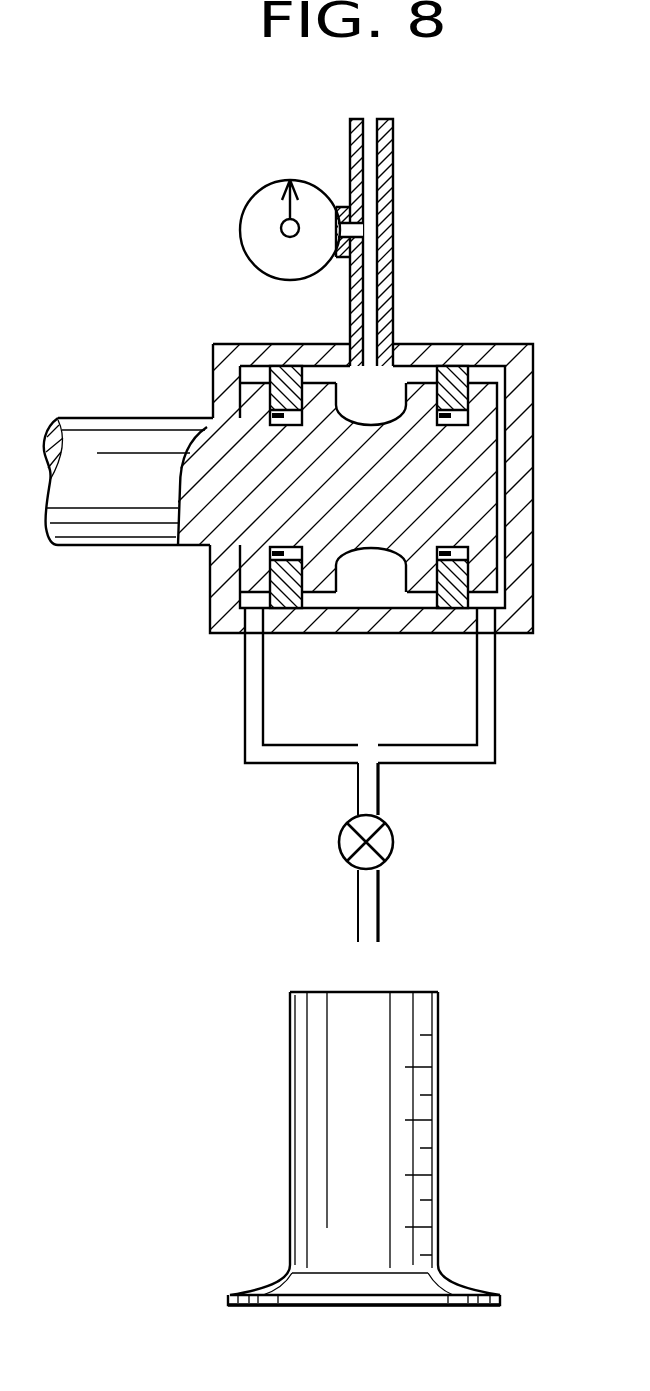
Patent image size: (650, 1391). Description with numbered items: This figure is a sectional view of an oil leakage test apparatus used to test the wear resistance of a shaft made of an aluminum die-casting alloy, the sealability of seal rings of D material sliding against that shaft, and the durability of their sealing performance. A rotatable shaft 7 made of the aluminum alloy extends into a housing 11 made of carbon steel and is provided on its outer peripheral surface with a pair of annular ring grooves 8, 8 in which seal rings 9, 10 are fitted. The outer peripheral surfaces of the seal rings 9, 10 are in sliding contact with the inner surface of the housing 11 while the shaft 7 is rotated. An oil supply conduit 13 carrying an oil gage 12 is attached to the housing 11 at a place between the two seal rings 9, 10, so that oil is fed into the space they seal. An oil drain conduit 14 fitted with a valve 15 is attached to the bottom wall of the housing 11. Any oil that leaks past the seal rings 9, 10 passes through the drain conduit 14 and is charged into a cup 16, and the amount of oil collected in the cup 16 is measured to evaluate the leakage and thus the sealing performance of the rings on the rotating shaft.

The rotatable shaft 7 is at (99, 440).
The annular ring grooves 8 is at (258, 411).
The seal ring 9 is at (288, 597).
The seal ring 10 is at (450, 597).
The housing 11 is at (371, 617).
The oil gage 12 is at (242, 220).
The oil supply conduit 13 is at (395, 218).
The oil drain conduit 14 is at (378, 911).
The valve 15 is at (394, 843).
The cup 16 is at (438, 1130).